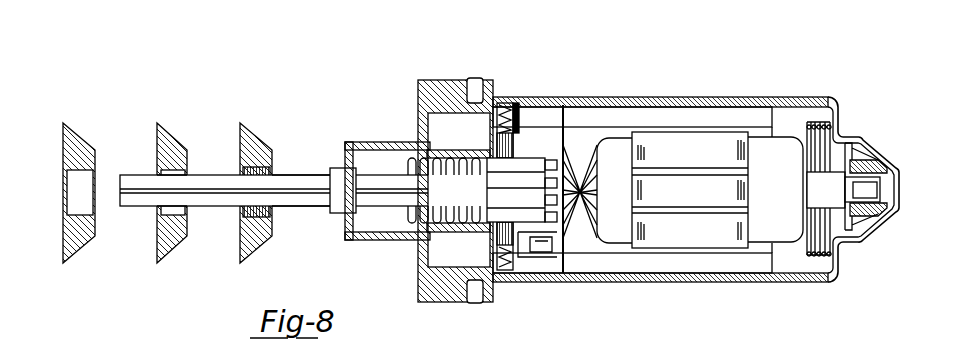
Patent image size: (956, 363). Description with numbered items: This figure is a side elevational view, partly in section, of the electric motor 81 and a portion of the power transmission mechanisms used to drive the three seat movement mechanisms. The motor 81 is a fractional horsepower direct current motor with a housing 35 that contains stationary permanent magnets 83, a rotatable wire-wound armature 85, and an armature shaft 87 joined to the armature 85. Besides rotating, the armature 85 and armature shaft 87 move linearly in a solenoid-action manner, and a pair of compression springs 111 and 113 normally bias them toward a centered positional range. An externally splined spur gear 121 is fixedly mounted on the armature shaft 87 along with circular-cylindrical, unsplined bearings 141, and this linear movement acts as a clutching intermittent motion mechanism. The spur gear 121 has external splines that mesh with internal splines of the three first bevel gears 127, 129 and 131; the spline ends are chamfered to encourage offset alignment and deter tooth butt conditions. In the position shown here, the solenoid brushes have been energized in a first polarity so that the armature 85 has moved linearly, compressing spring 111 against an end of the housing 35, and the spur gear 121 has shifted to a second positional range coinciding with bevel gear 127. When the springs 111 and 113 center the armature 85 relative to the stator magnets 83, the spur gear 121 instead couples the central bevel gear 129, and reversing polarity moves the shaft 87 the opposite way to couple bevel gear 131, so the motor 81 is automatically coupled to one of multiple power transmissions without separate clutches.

The first bevel gear 131 is at (68, 133).
The bearings 141 is at (158, 174).
The central bevel gear 129 is at (170, 140).
The bevel gear 127 is at (252, 138).
The spur gear 121 is at (263, 187).
The armature shaft 87 is at (318, 192).
The compression spring 113 is at (412, 164).
The permanent magnets 83 is at (590, 112).
The housing 35 is at (637, 100).
The armature 85 is at (688, 185).
The electric motor 81 is at (779, 117).
The compression spring 111 is at (820, 125).